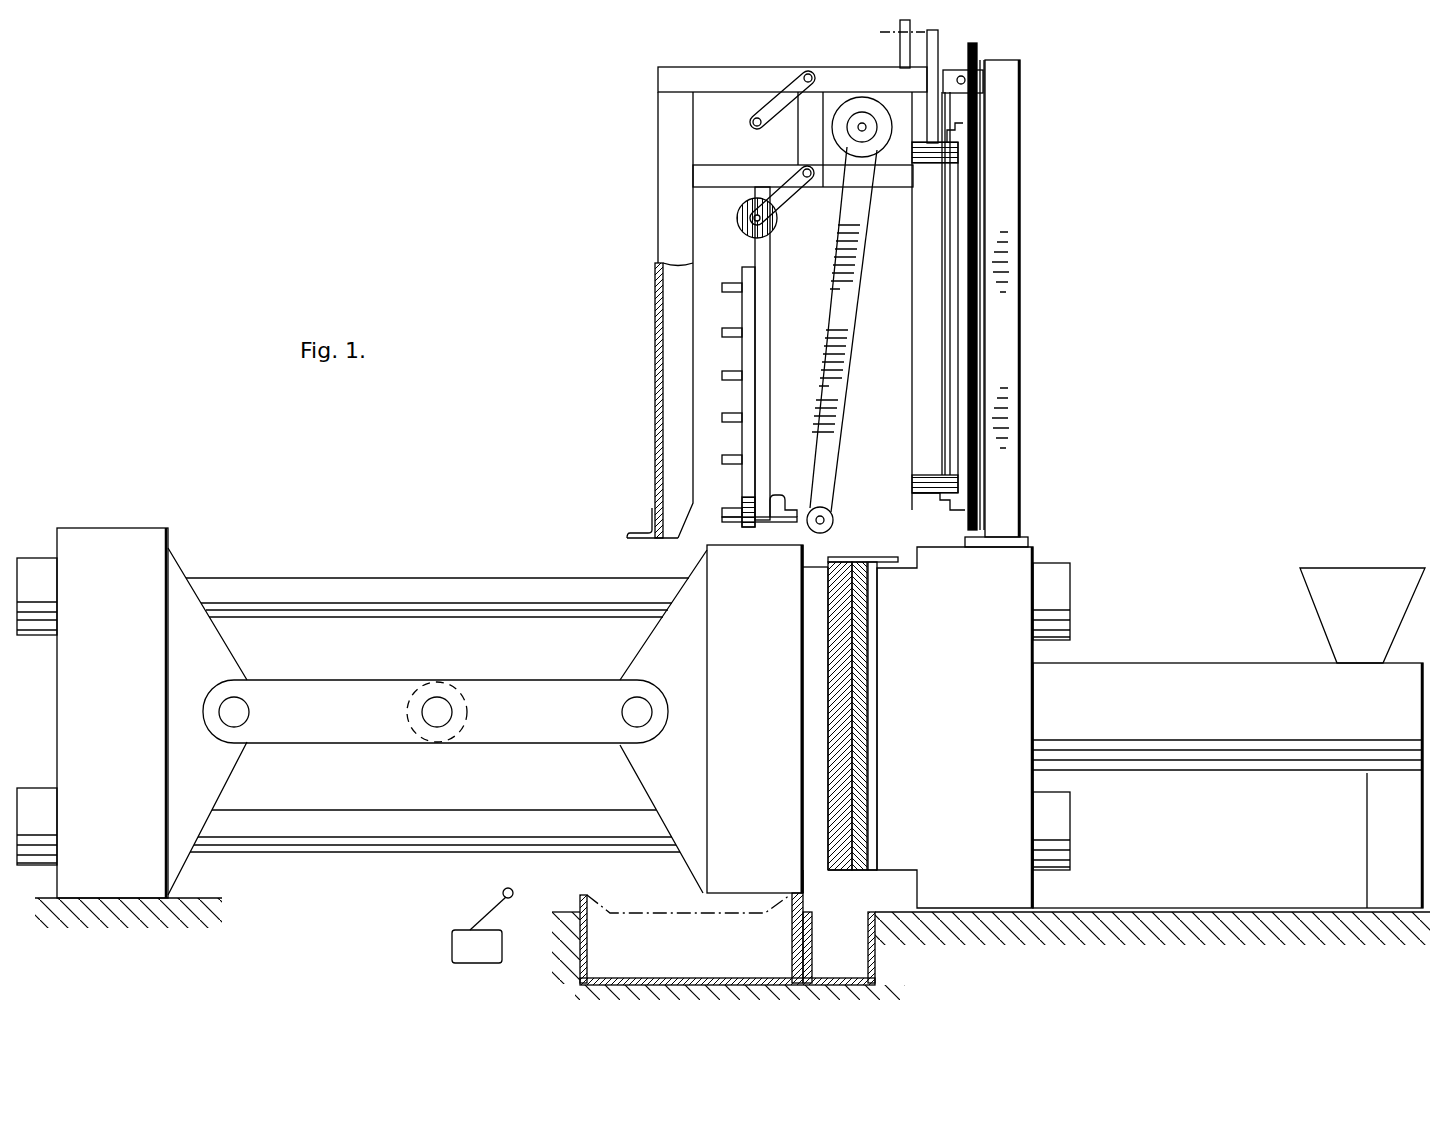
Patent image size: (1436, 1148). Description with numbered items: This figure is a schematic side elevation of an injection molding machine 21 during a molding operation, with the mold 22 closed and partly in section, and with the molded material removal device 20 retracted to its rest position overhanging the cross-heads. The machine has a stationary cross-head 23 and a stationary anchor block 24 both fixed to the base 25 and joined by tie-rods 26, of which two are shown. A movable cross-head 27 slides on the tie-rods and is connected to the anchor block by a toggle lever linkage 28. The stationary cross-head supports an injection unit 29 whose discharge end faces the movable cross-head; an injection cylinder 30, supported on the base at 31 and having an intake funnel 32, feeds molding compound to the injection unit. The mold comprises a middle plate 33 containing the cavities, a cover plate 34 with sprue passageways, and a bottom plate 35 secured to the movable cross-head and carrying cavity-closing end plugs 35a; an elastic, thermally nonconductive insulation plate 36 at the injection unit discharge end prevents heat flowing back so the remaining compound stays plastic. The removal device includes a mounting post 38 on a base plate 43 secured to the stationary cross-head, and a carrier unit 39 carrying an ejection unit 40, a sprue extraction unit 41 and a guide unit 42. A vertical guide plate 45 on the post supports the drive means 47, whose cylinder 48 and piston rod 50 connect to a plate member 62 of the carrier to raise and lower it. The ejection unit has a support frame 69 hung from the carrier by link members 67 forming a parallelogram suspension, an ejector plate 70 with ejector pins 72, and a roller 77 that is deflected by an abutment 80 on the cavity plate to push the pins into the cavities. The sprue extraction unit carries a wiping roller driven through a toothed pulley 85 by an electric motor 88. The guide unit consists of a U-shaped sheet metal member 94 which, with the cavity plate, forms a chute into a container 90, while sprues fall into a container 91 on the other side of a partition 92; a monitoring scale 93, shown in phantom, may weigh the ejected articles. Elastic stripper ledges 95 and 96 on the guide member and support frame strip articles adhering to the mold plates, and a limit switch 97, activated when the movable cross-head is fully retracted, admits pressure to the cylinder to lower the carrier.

The molded material removal device 20 is at (1047, 160).
The molding machine 21 is at (1090, 583).
The multiplate mold 22 is at (856, 892).
The stationary cross-head 23 is at (1025, 884).
The stationary anchor block 24 is at (135, 527).
The base 25 is at (1243, 922).
The tie-rods 26 is at (404, 580).
The movable cross-head 27 is at (705, 564).
The toggle lever linkage 28 is at (505, 690).
The injection unit 29 is at (903, 712).
The injection cylinder 30 is at (1217, 667).
The injection cylinder support 31 is at (1375, 806).
The intake funnel 32 is at (1367, 575).
The middle plate 33 is at (843, 562).
The cover plate 34 is at (868, 668).
The bottom plate 35 is at (802, 624).
The cavity-closing end plugs 35a is at (828, 768).
The insulation plate 36 is at (872, 790).
The mounting post 38 is at (1007, 247).
The carrier unit 39 is at (788, 56).
The molded article ejection unit 40 is at (783, 314).
The sprue extraction unit 41 is at (860, 375).
The molded article guide unit 42 is at (640, 150).
The base plate 43 is at (1030, 540).
The vertical guide plate 45 is at (970, 326).
The drive means 47 is at (903, 435).
The cylinder 48 is at (912, 330).
The piston rod 50 is at (965, 36).
The plate member 62 is at (898, 48).
The link members 67 is at (772, 188).
The support frame 69 is at (766, 360).
The ejector plate 70 is at (745, 392).
The ejector pins 72 is at (722, 332).
The roller 77 is at (743, 232).
The abutments 80 is at (896, 558).
The toothed pulley 85 is at (832, 517).
The electric motor 88 is at (883, 125).
The container 90 is at (588, 950).
The container 91 is at (812, 953).
The partition 92 is at (803, 890).
The monitoring scale 93 is at (652, 920).
The U-shaped sheet metal member 94 is at (655, 380).
The elastic stripper ledge 95 is at (635, 532).
The elastic stripper ledge 96 is at (790, 510).
The limit switch 97 is at (455, 942).